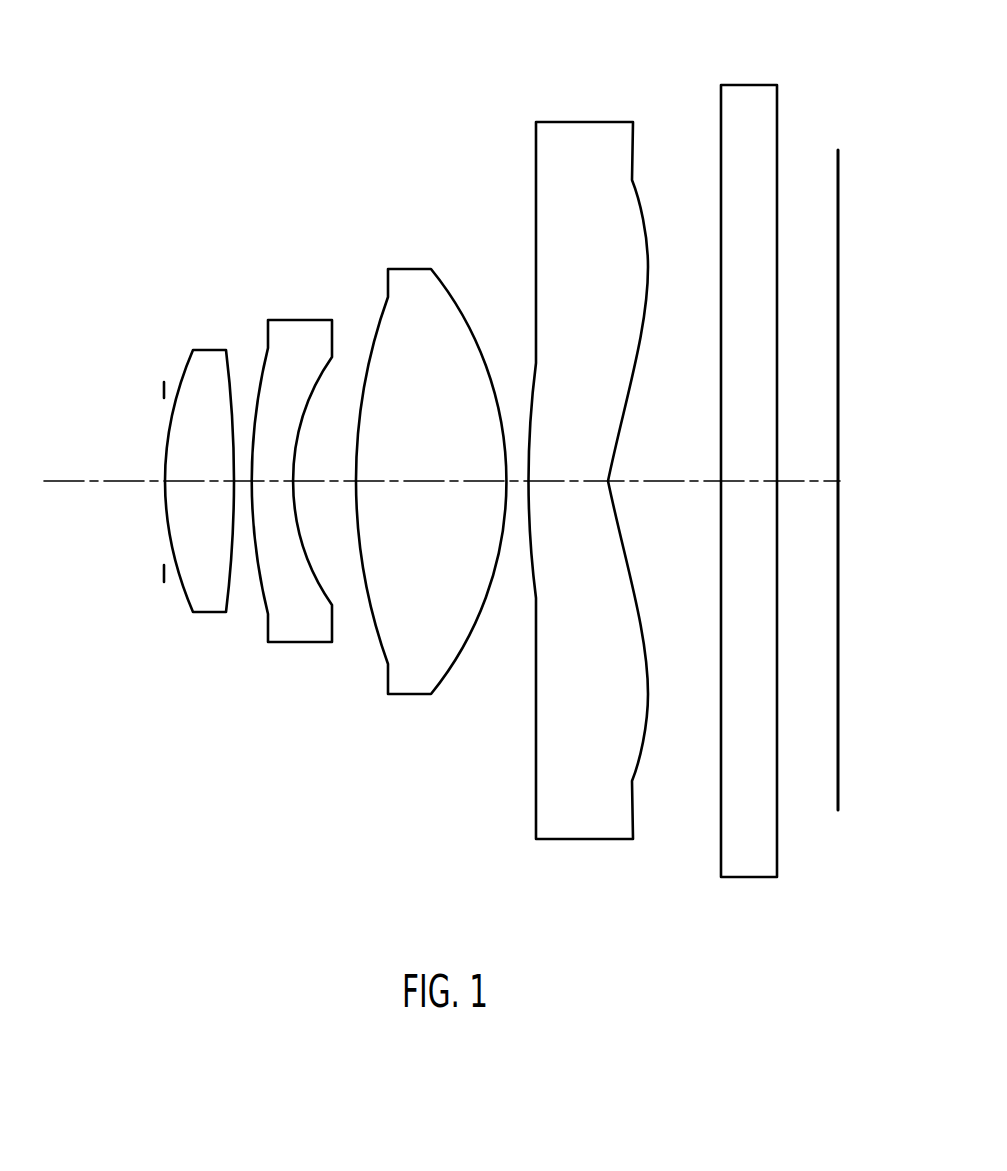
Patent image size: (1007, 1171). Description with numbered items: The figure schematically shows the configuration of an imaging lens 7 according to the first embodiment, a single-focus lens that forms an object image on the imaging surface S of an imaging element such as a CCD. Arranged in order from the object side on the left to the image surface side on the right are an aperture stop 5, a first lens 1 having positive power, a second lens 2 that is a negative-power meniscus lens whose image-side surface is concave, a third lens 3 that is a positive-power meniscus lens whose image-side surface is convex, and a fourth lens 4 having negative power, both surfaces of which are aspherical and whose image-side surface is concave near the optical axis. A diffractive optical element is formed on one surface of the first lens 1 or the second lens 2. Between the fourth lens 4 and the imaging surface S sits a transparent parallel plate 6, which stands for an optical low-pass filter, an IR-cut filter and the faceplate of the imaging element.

The first lens 1 is at (208, 349).
The second lens 2 is at (298, 320).
The third lens 3 is at (408, 268).
The fourth lens 4 is at (585, 121).
The aperture stop 5 is at (162, 390).
The parallel plate 6 is at (742, 85).
The imaging lens 7 is at (276, 102).
The imaging surface S is at (840, 198).